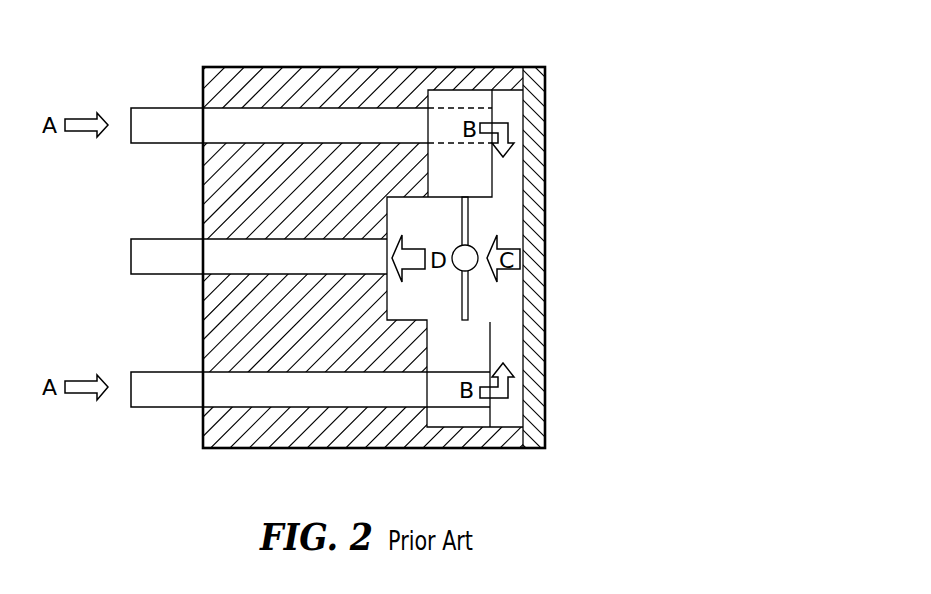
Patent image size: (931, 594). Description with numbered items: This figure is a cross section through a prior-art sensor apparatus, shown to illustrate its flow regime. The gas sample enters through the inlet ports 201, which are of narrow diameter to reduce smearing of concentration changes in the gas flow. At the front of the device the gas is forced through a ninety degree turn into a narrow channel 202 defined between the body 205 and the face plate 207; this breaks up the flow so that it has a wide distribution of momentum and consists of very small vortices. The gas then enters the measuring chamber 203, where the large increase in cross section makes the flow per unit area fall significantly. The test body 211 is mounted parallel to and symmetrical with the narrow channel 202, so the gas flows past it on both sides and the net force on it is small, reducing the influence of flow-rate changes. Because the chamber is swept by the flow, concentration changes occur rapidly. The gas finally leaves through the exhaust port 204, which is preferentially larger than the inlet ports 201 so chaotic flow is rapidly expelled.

The inlet ports 201 is at (145, 107).
The narrow channel 202 is at (510, 107).
The measuring chamber 203 is at (483, 292).
The exhaust port 204 is at (145, 238).
The body 205 is at (477, 67).
The face plate 207 is at (545, 85).
The test body 211 is at (475, 247).